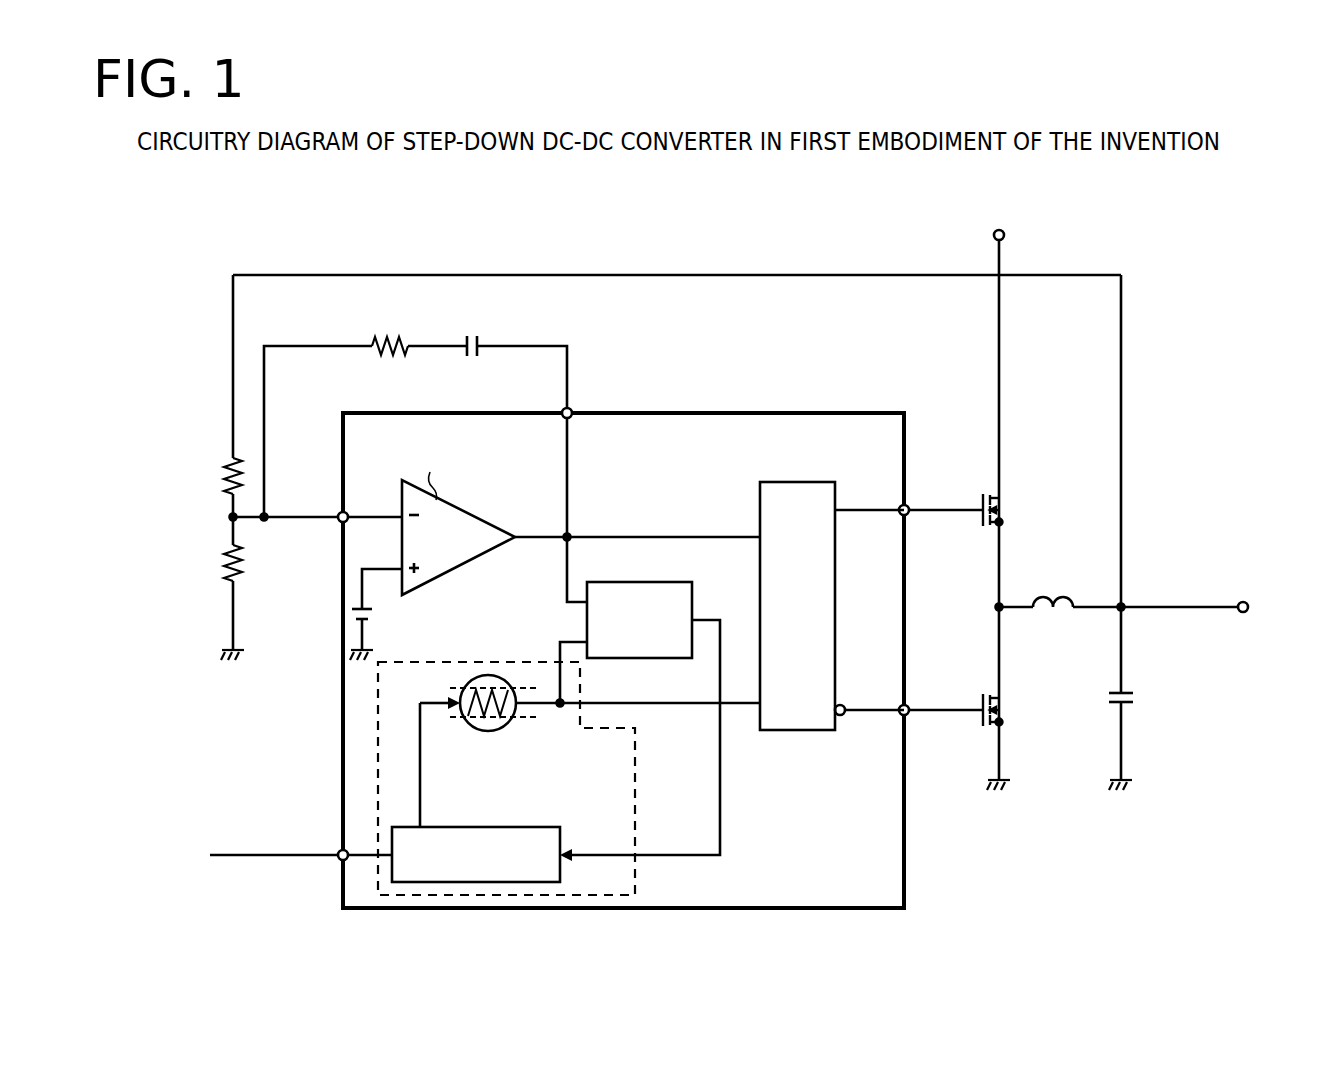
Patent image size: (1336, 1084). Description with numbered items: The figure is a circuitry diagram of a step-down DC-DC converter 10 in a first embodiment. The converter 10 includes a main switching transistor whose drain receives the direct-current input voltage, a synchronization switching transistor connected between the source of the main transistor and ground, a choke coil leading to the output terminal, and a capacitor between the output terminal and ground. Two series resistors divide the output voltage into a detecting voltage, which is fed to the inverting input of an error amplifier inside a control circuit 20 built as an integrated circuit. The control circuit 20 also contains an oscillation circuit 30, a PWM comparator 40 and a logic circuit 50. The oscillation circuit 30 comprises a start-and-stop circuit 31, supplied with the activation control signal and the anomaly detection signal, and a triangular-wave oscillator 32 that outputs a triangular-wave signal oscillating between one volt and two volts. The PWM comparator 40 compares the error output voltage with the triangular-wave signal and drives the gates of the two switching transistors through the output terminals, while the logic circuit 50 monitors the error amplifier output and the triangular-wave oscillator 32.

The step-down DC-DC converter 10 is at (1126, 246).
The control circuit 20 is at (721, 412).
The oscillation circuit 30 is at (594, 896).
The start-and-stop circuit 31 is at (463, 883).
The triangular-wave oscillator 32 is at (489, 675).
The PWM comparator 40 is at (818, 482).
The logic circuit 50 is at (676, 583).